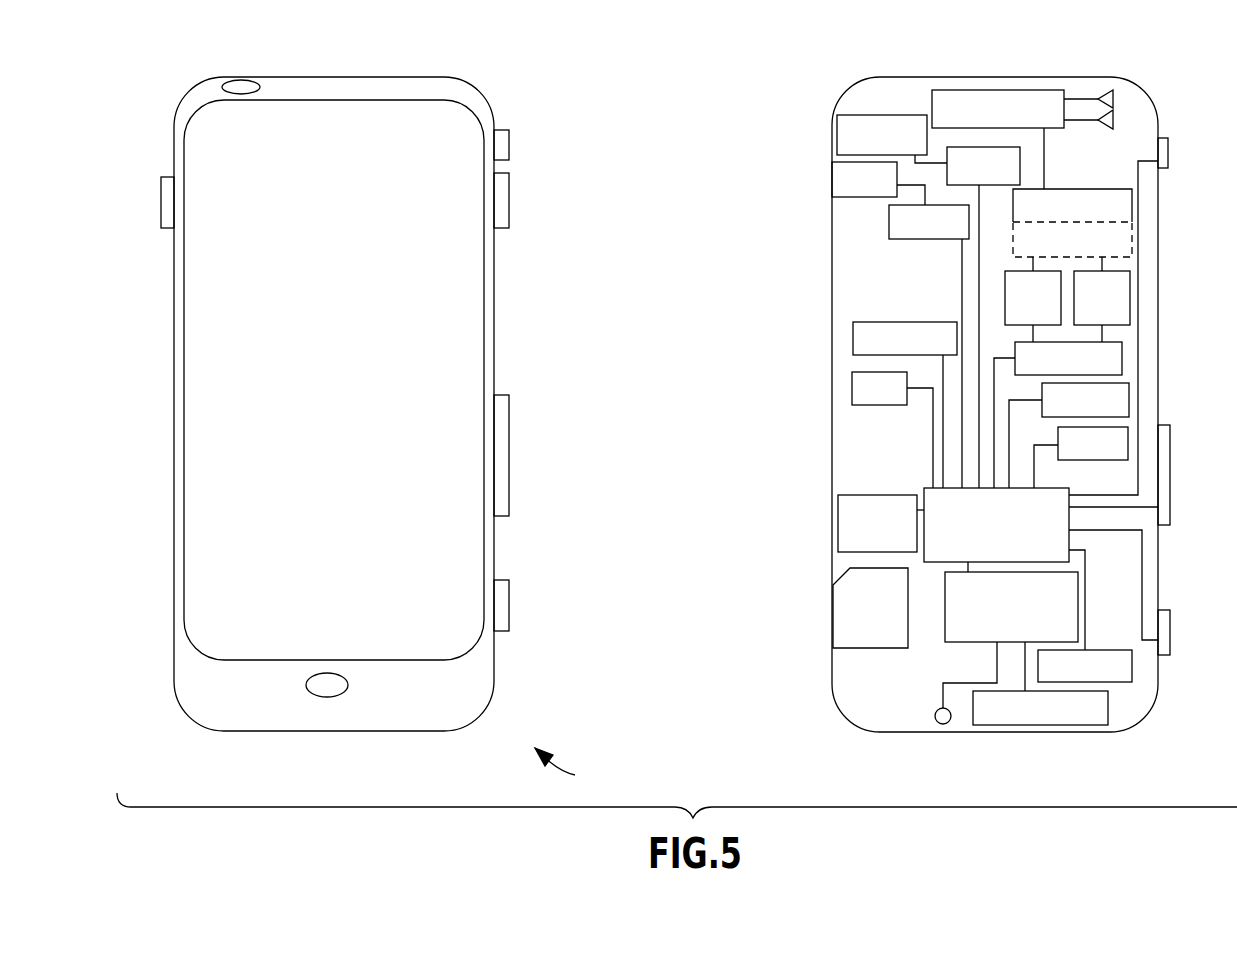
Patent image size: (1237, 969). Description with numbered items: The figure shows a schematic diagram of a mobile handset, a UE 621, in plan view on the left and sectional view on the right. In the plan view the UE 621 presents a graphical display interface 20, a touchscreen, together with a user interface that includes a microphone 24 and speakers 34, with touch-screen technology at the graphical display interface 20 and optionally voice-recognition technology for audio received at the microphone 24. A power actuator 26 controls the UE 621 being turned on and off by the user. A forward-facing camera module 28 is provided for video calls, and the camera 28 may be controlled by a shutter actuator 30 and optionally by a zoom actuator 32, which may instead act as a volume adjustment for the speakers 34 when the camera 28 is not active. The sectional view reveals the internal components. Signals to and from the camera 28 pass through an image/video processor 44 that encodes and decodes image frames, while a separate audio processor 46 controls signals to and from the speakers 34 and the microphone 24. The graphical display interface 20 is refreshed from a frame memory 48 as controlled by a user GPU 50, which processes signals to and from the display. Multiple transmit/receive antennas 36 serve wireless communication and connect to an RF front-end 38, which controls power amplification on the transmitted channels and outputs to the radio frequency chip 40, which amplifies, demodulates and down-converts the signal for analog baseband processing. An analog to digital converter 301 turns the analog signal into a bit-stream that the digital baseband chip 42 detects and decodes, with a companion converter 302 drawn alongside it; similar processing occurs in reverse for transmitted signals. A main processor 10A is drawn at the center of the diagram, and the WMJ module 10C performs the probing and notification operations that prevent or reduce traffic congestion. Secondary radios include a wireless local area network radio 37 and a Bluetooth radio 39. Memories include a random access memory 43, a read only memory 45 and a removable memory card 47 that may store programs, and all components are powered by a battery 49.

The graphical display interface 20 is at (203, 362).
The microphone 24 is at (328, 690).
The power actuator 26 is at (503, 140).
The camera module 28 is at (241, 84).
The shutter actuator 30 is at (505, 597).
The zoom actuator 32 is at (505, 435).
The speaker 34 is at (165, 178).
The transmit/receive antennas 36 is at (1115, 84).
The wireless local area network radio 37 is at (858, 350).
The RF front-end 38 is at (967, 95).
The Bluetooth radio 39 is at (858, 392).
The radio frequency chip 40 is at (1132, 217).
The digital baseband chip 42 is at (1118, 362).
The random access memory 43 is at (1123, 403).
The image/video processor 44 is at (1015, 178).
The read only memory 45 is at (1123, 443).
The audio processor 46 is at (890, 228).
The memory card 47 is at (840, 592).
The frame memory 48 is at (1037, 725).
The battery 49 is at (1128, 680).
The user GPU 50 is at (968, 632).
The main/master processor 10A is at (933, 493).
The WMJ module 10C is at (847, 512).
The analog to digital converter 301 is at (1033, 298).
The DAC 302 is at (1102, 298).
The UE 621 is at (577, 768).